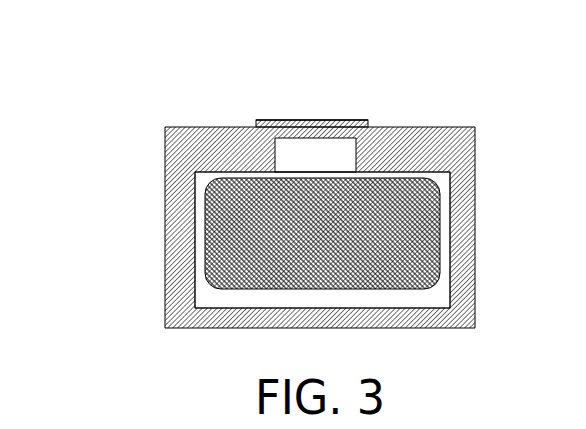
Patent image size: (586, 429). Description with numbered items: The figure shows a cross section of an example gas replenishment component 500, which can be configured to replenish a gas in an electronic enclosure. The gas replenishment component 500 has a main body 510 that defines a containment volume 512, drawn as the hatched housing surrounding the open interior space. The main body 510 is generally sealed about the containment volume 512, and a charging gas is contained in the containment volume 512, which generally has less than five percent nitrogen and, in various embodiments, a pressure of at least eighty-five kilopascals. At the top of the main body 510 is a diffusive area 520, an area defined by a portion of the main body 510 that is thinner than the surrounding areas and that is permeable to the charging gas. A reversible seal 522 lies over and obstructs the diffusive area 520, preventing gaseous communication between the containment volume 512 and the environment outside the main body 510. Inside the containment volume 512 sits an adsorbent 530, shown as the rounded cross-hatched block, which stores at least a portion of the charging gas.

The gas replenishment component 500 is at (124, 100).
The main body 510 is at (474, 150).
The containment volume 512 is at (438, 296).
The diffusive area 520 is at (348, 127).
The reversible seal 522 is at (316, 121).
The adsorbent 530 is at (431, 210).